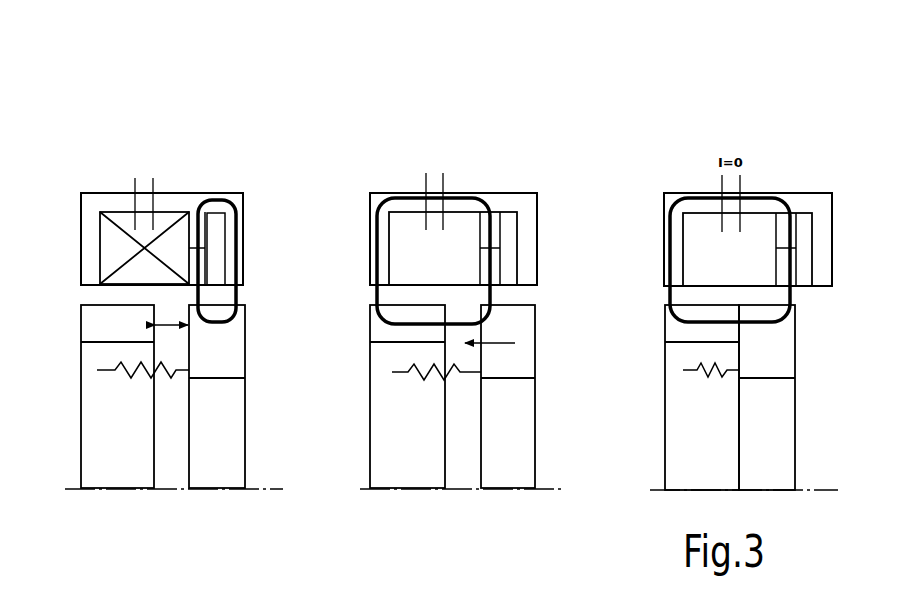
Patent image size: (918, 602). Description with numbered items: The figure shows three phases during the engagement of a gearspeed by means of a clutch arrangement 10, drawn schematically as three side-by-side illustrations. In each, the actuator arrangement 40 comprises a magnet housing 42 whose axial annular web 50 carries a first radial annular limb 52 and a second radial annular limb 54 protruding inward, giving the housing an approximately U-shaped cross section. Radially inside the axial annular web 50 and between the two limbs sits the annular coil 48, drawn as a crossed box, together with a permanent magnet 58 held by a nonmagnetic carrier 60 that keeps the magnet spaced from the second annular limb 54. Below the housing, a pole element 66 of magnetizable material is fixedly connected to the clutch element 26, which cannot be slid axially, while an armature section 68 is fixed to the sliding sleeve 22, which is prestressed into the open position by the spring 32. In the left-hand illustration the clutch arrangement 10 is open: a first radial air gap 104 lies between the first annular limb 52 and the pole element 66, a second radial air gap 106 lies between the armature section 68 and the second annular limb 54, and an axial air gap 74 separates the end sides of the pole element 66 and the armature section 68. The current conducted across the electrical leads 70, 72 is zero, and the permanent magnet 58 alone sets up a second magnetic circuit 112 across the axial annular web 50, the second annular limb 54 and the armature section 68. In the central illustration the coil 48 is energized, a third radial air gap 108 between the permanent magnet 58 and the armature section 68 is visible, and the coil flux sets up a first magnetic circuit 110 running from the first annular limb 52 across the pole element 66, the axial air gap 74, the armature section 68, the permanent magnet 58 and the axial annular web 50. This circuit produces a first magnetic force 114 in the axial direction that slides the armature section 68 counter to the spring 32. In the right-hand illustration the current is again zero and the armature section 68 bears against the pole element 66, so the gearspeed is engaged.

The clutch arrangement 10 is at (243, 144).
The sliding sleeve 22 is at (213, 463).
The clutch element 26 is at (127, 467).
The spring 32 is at (110, 370).
The actuator arrangement 40 is at (105, 167).
The magnet housing 42 is at (77, 191).
The coil 48 is at (110, 258).
The axial annular web 50 is at (175, 205).
The first radial annular limb 52 is at (90, 225).
The second radial annular limb 54 is at (245, 260).
The permanent magnet 58 is at (200, 212).
The carrier 60 is at (213, 252).
The pole element 66 is at (93, 323).
The armature section 68 is at (230, 350).
The electrical lead 70 is at (135, 178).
The electrical lead 72 is at (153, 178).
The axial air gap 74 is at (178, 364).
The first radial air gap 104 is at (97, 295).
The second radial air gap 106 is at (523, 297).
The third radial air gap 108 is at (488, 297).
The first magnetic circuit 110 is at (398, 195).
The second magnetic circuit 112 is at (233, 293).
The first magnetic force 114 is at (493, 343).